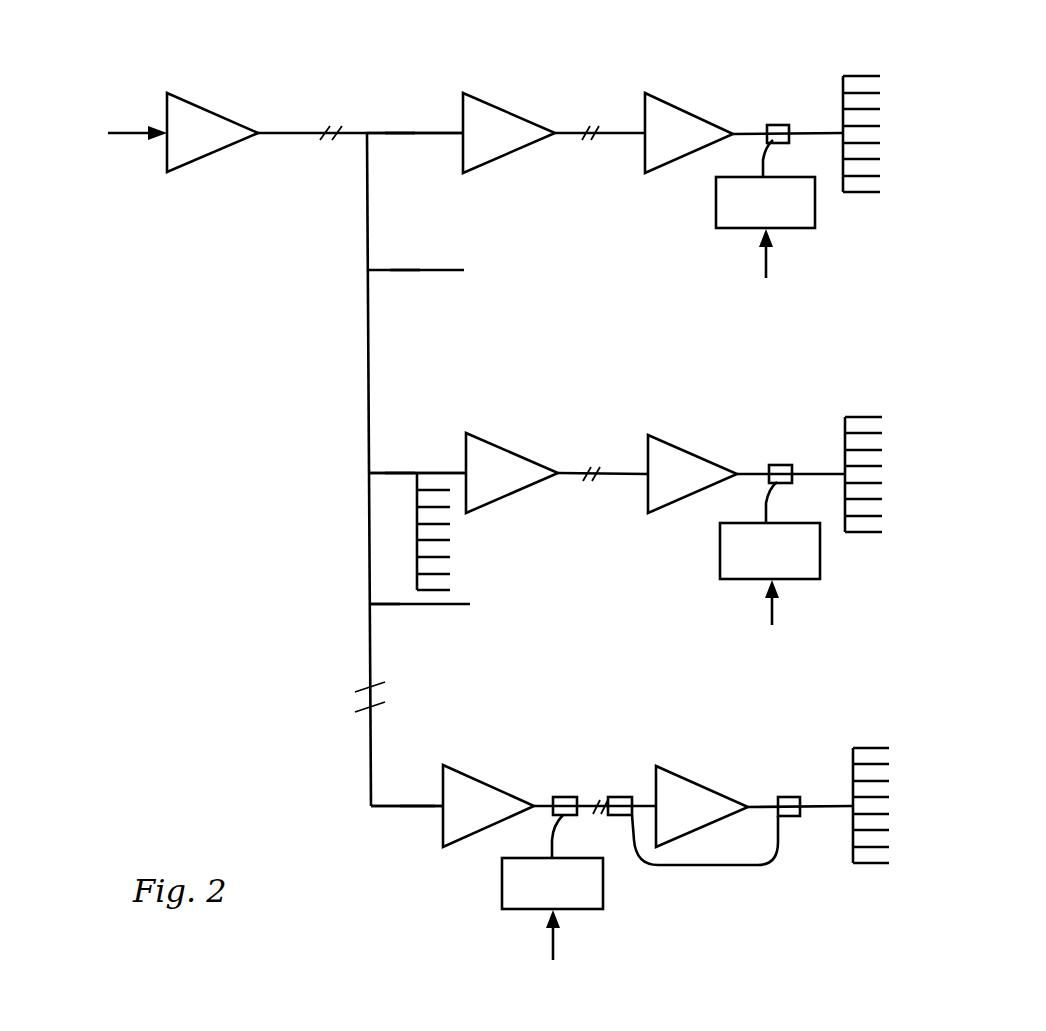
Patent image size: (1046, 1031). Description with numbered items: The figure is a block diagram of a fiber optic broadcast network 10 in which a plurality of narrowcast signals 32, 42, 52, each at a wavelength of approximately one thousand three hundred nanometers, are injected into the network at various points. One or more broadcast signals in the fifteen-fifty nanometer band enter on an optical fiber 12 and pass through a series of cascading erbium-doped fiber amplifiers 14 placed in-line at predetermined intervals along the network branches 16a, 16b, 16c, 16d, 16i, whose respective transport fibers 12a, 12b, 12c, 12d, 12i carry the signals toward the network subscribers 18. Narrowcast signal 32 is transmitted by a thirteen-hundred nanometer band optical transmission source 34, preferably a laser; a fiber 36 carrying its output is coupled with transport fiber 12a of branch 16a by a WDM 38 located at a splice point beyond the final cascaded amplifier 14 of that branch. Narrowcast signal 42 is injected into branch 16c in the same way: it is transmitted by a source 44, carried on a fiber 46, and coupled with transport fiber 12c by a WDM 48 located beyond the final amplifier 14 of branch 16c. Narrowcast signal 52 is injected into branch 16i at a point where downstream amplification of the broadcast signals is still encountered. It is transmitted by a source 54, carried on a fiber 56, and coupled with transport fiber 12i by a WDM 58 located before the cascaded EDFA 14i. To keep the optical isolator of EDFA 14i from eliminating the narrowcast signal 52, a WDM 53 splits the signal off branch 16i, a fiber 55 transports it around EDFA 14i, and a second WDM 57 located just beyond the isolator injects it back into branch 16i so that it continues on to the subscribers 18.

The fiber optic broadcast network 10 is at (568, 90).
The optical fiber 12 is at (134, 137).
The transport fiber 12a is at (410, 138).
The transport fiber 12b is at (398, 274).
The transport fiber 12c is at (380, 477).
The transport fiber 12d is at (415, 608).
The transport fiber 12i is at (398, 810).
The erbium-doped fiber amplifier 14 is at (218, 110).
The cascaded EDFA 14i is at (697, 778).
The network branch 16a is at (400, 132).
The network branch 16b is at (405, 269).
The network branch 16c is at (398, 472).
The network branch 16d is at (385, 601).
The network branch 16i is at (418, 805).
The network subscriber 18 is at (848, 72).
The narrowcast signal 32 is at (767, 270).
The 1300 nm band optical transmission source 34 is at (716, 204).
The fiber 36 is at (768, 163).
The WDM 38 is at (776, 124).
The narrowcast signal 42 is at (773, 612).
The 1300 nm band optical transmission source 44 is at (720, 554).
The fiber 46 is at (772, 502).
The WDM 48 is at (781, 464).
The narrowcast signal 52 is at (555, 948).
The WDM 53 is at (620, 796).
The 1300 nm band optical transmission source 54 is at (502, 886).
The fiber 55 is at (748, 868).
The fiber 56 is at (558, 842).
The second WDM 57 is at (790, 796).
The WDM 58 is at (565, 796).